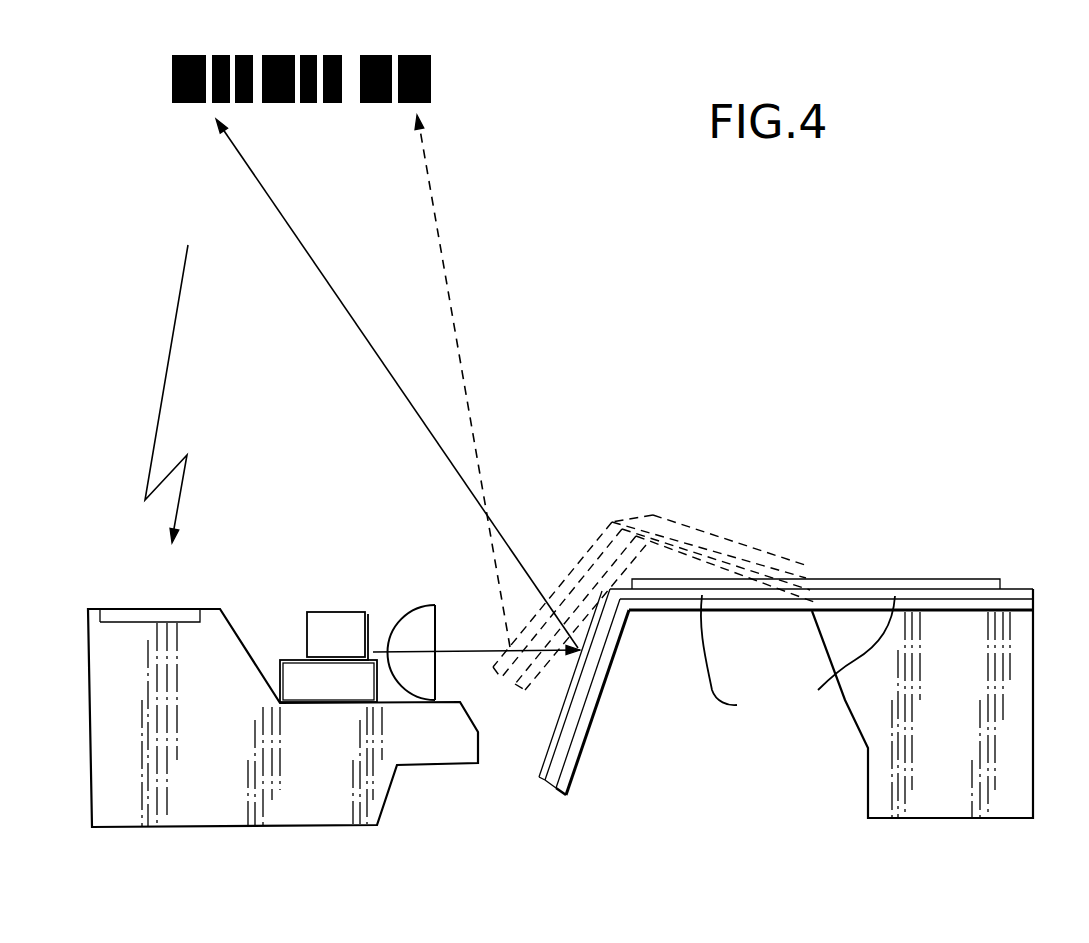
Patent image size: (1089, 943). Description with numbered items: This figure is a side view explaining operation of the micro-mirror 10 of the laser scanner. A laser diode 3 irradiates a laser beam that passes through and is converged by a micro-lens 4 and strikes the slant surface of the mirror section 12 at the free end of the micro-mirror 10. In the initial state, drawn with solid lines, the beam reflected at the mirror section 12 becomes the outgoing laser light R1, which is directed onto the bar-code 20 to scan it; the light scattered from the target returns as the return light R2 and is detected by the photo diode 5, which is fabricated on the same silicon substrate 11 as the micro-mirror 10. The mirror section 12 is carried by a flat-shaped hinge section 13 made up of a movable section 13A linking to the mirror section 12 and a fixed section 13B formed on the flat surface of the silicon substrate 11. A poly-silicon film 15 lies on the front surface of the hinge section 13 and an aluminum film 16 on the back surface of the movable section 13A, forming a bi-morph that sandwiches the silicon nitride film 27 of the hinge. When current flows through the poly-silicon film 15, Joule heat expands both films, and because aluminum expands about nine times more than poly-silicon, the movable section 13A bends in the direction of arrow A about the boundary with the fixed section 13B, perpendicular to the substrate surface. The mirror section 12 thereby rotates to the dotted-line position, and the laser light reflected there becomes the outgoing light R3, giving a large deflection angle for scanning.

The bar-code 20 is at (372, 47).
The outgoing laser light R1 is at (375, 380).
The return light R2 is at (176, 380).
The outgoing light R3 is at (462, 379).
The photo diode 5 is at (116, 608).
The laser diode 3 is at (323, 611).
The micro-lens 4 is at (430, 685).
The micro-mirror 10 is at (737, 512).
The arrow A is at (733, 640).
The mirror section 12 is at (558, 723).
The aluminum film 16 is at (590, 727).
The silicon nitride film 27 is at (563, 760).
The poly-silicon film 15 is at (940, 578).
The movable section 13A is at (723, 676).
The fixed section 13B is at (839, 676).
The hinge section 13 is at (810, 760).
The silicon substrate 11 is at (1017, 688).